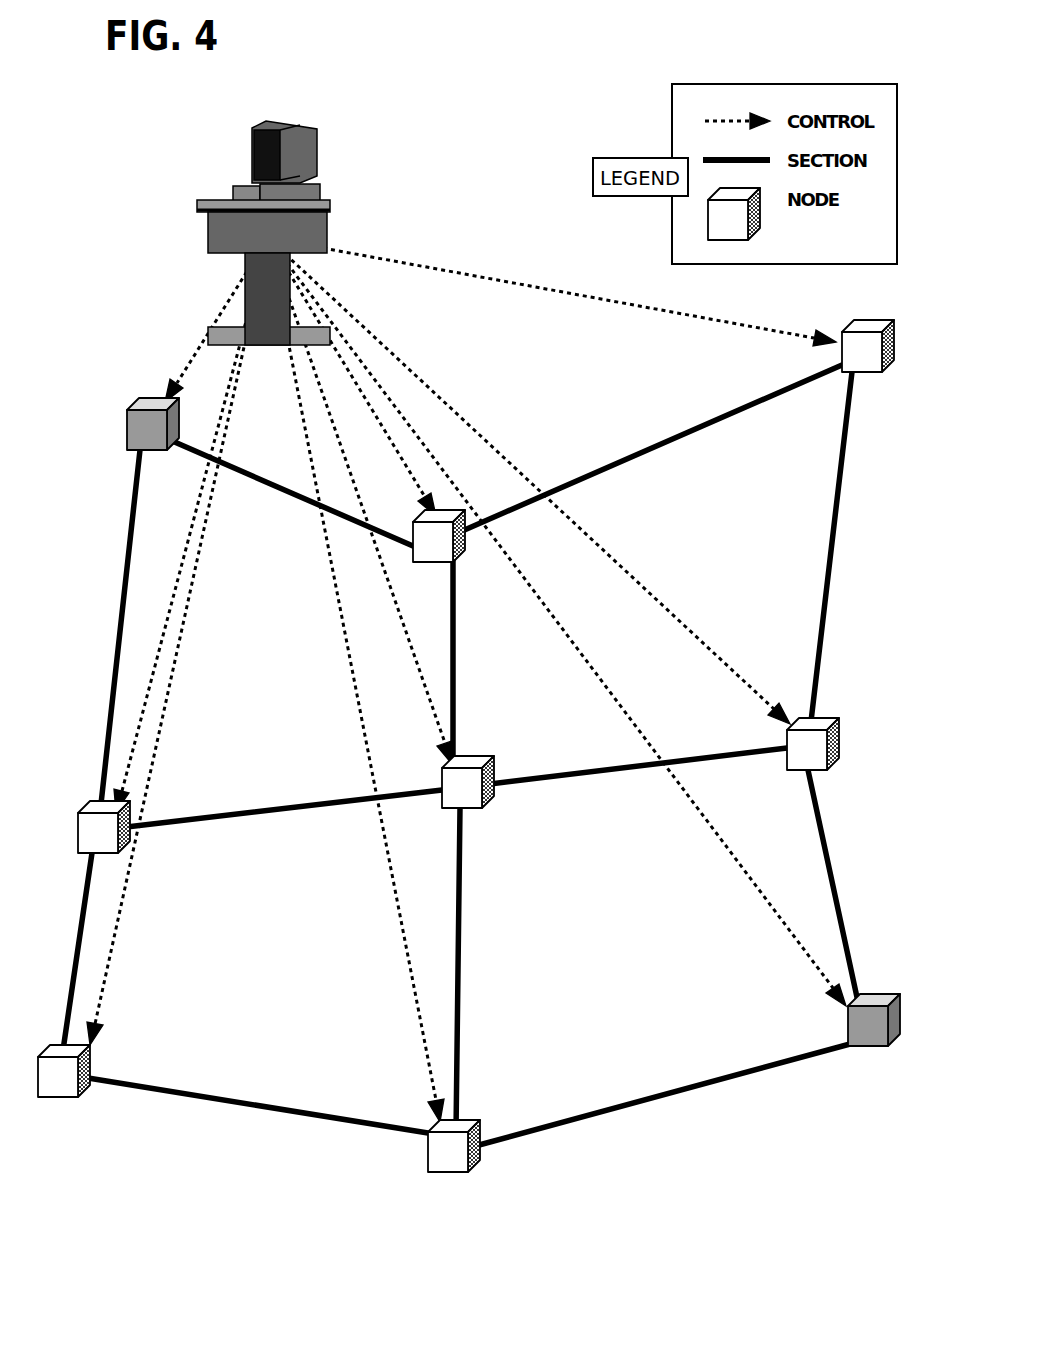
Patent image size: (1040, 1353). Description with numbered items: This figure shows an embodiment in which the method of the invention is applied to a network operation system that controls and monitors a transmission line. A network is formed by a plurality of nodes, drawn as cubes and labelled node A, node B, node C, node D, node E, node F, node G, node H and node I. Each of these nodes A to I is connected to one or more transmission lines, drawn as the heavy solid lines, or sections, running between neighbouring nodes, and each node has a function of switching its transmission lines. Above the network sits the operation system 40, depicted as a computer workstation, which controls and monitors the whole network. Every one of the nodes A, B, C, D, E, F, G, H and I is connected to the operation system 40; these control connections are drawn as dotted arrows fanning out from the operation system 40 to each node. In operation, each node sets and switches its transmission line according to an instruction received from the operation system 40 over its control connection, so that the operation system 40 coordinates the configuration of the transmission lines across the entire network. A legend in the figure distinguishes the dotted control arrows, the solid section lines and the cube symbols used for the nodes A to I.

The operation system 40 is at (328, 191).
The node A is at (153, 424).
The node B is at (439, 536).
The node C is at (868, 346).
The node D is at (104, 827).
The node E is at (468, 782).
The node F is at (813, 744).
The node G is at (64, 1071).
The node H is at (454, 1146).
The node I is at (874, 1020).